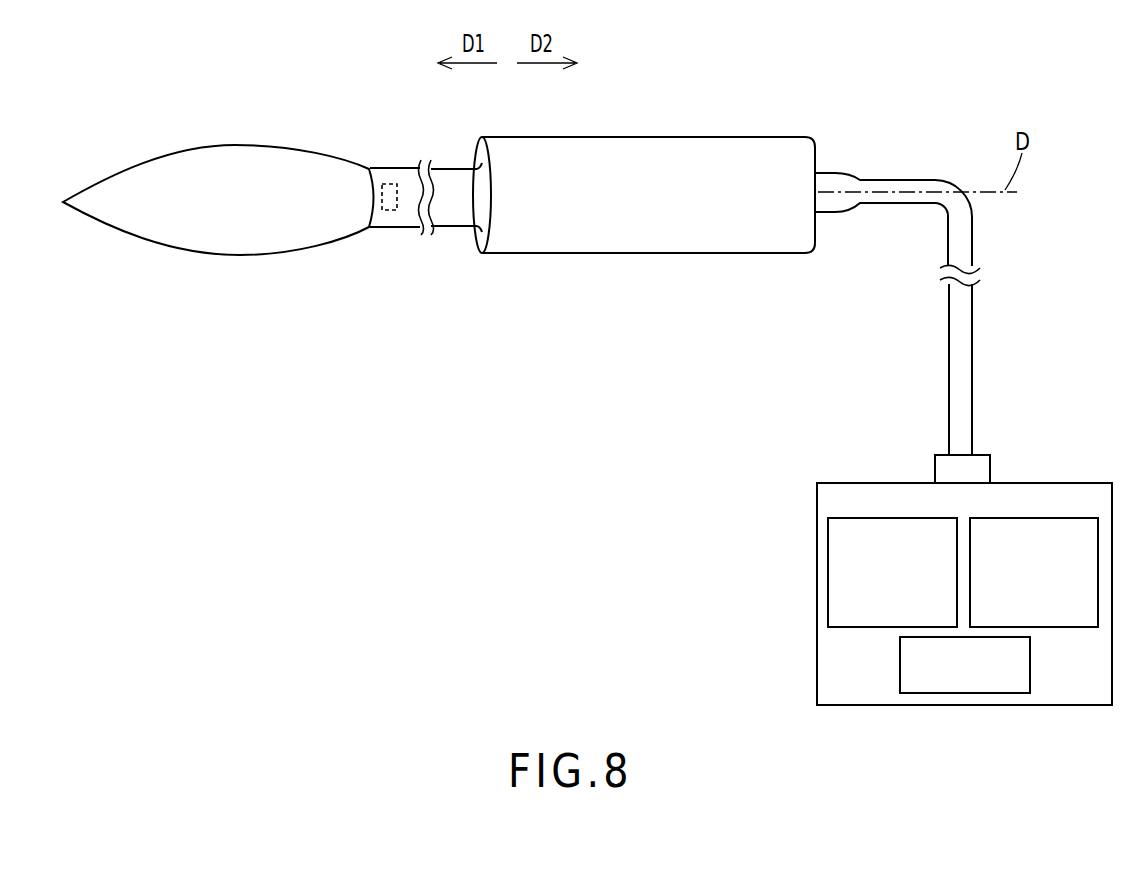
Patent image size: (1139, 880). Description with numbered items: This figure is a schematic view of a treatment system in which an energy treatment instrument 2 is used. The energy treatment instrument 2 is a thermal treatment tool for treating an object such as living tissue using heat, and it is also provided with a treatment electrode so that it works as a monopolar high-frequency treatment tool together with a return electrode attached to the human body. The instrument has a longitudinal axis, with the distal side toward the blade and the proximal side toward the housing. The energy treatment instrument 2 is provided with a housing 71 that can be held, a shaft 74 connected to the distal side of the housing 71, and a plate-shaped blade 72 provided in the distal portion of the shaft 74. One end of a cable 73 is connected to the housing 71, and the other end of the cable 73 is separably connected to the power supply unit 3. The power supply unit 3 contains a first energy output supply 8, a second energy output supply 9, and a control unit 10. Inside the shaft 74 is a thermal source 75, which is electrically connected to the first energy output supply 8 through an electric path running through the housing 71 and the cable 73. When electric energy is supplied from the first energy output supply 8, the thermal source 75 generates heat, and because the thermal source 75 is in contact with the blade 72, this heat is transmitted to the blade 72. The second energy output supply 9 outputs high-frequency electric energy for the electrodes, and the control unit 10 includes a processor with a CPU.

The energy treatment instrument 2 is at (713, 100).
The power supply unit 3 is at (1043, 481).
The first energy output supply 8 is at (918, 518).
The second energy output supply 9 is at (1058, 518).
The control unit 10 is at (1031, 658).
The housing 71 is at (765, 150).
The blade 72 is at (271, 160).
The cable 73 is at (963, 238).
The shaft 74 is at (445, 180).
The thermal source 75 is at (387, 180).